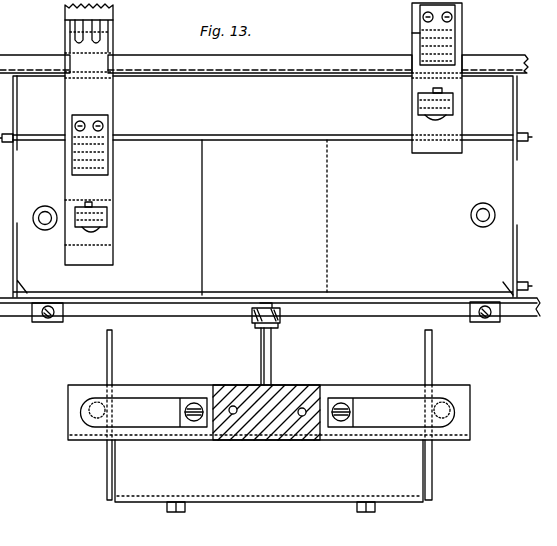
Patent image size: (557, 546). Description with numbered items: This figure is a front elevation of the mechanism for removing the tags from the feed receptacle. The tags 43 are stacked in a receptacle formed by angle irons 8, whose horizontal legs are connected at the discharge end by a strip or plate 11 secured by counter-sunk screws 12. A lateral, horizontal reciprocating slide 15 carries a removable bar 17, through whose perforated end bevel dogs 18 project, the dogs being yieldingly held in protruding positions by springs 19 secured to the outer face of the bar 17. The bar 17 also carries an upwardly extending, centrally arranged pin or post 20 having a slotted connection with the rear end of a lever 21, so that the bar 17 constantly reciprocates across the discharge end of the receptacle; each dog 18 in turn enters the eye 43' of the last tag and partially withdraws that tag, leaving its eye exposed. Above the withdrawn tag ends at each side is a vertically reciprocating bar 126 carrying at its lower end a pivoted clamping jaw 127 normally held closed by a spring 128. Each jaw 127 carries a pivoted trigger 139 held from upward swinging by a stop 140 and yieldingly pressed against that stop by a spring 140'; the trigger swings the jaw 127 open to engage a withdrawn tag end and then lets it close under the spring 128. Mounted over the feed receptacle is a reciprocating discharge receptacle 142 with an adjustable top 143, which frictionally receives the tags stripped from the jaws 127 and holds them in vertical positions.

The angle irons 8 is at (106, 360).
The strip or plate 11 is at (269, 471).
The counter-sunk screws 12 is at (180, 512).
The reciprocating slide 15 is at (288, 432).
The removable bar 17 is at (173, 377).
The bevel dogs 18 is at (90, 413).
The springs 19 is at (268, 412).
The pin or post 20 is at (260, 362).
The lever 21 is at (257, 321).
The tags 43 is at (263, 186).
The eye of tag 43' is at (260, 221).
The vertically reciprocating bar 126 is at (103, 94).
The pivoted clamping jaw 127 is at (445, 89).
The spring 128 is at (445, 25).
The pivoted trigger 139 is at (415, 107).
The stop 140 is at (263, 149).
The spring 140' is at (264, 175).
The discharge receptacle 142 is at (20, 98).
The adjustable top 143 is at (162, 138).